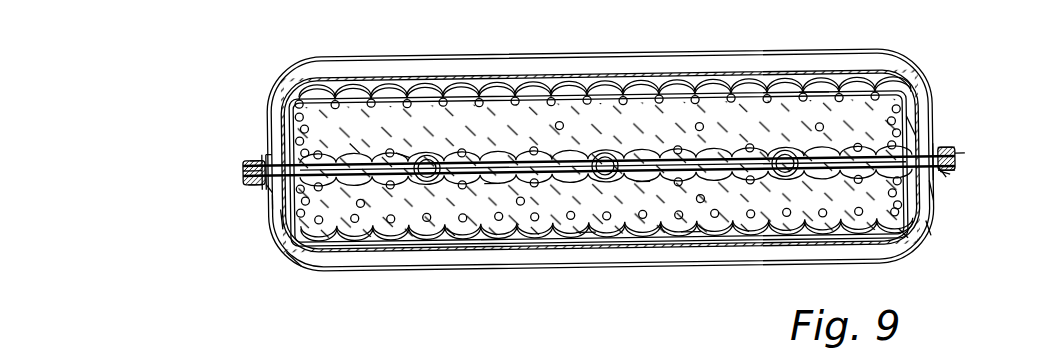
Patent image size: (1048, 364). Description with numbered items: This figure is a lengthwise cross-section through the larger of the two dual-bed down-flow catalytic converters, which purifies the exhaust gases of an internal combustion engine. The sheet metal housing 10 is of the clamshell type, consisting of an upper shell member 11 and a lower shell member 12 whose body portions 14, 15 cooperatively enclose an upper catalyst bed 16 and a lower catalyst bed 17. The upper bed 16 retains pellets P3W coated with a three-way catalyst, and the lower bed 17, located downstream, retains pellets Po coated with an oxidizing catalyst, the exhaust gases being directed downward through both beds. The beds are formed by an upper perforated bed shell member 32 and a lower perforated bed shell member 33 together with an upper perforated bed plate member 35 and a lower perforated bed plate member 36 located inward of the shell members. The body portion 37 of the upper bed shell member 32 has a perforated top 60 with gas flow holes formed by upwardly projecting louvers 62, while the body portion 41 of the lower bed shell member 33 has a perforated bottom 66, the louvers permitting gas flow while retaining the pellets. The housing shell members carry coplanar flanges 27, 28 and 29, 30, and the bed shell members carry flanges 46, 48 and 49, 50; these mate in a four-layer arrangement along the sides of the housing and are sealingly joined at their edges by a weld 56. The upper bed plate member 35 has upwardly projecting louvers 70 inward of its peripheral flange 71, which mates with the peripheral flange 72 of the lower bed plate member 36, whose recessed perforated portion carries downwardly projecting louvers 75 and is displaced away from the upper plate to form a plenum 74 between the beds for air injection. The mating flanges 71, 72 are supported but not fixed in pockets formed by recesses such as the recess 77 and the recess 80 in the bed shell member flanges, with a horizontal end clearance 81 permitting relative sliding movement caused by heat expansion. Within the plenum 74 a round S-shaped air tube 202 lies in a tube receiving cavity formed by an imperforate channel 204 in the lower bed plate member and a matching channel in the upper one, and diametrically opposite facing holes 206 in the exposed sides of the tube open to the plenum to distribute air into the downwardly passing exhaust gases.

The housing 10 is at (927, 72).
The upper shell member 11 is at (933, 87).
The lower shell member 12 is at (292, 258).
The body portion 14 is at (914, 130).
The body portion 15 is at (933, 192).
The upper catalyst bed 16 is at (912, 112).
The lower catalyst bed 17 is at (903, 237).
The flange 27 is at (965, 155).
The flange 28 is at (252, 163).
The flange 29 is at (946, 178).
The flange 30 is at (250, 180).
The upper bed shell member 32 is at (748, 88).
The lower bed shell member 33 is at (690, 232).
The upper bed plate member 35 is at (402, 154).
The lower bed plate member 36 is at (490, 185).
The body portion 37 is at (957, 147).
The body portion 41 is at (929, 228).
The flange 46 is at (957, 162).
The flange 48 is at (245, 165).
The flange 49 is at (950, 171).
The flange 50 is at (245, 172).
The weld 56 is at (948, 174).
The perforated top 60 is at (397, 98).
The louvers 62 is at (700, 90).
The perforated bottom 66 is at (490, 242).
The louvers 70 is at (520, 104).
The peripheral flange 71 is at (355, 144).
The peripheral flange 72 is at (281, 218).
The plenum 74 is at (725, 160).
The louvers 75 is at (640, 184).
The recess 77 is at (268, 188).
The recess 80 is at (272, 203).
The horizontal end clearance 81 is at (267, 158).
The S-shaped air tube 202 is at (432, 178).
The imperforate channel 204 is at (425, 182).
The holes 206 is at (440, 162).
The three-way catalyst pellets P3W is at (815, 93).
The oxidizing catalyst pellets Po is at (585, 232).